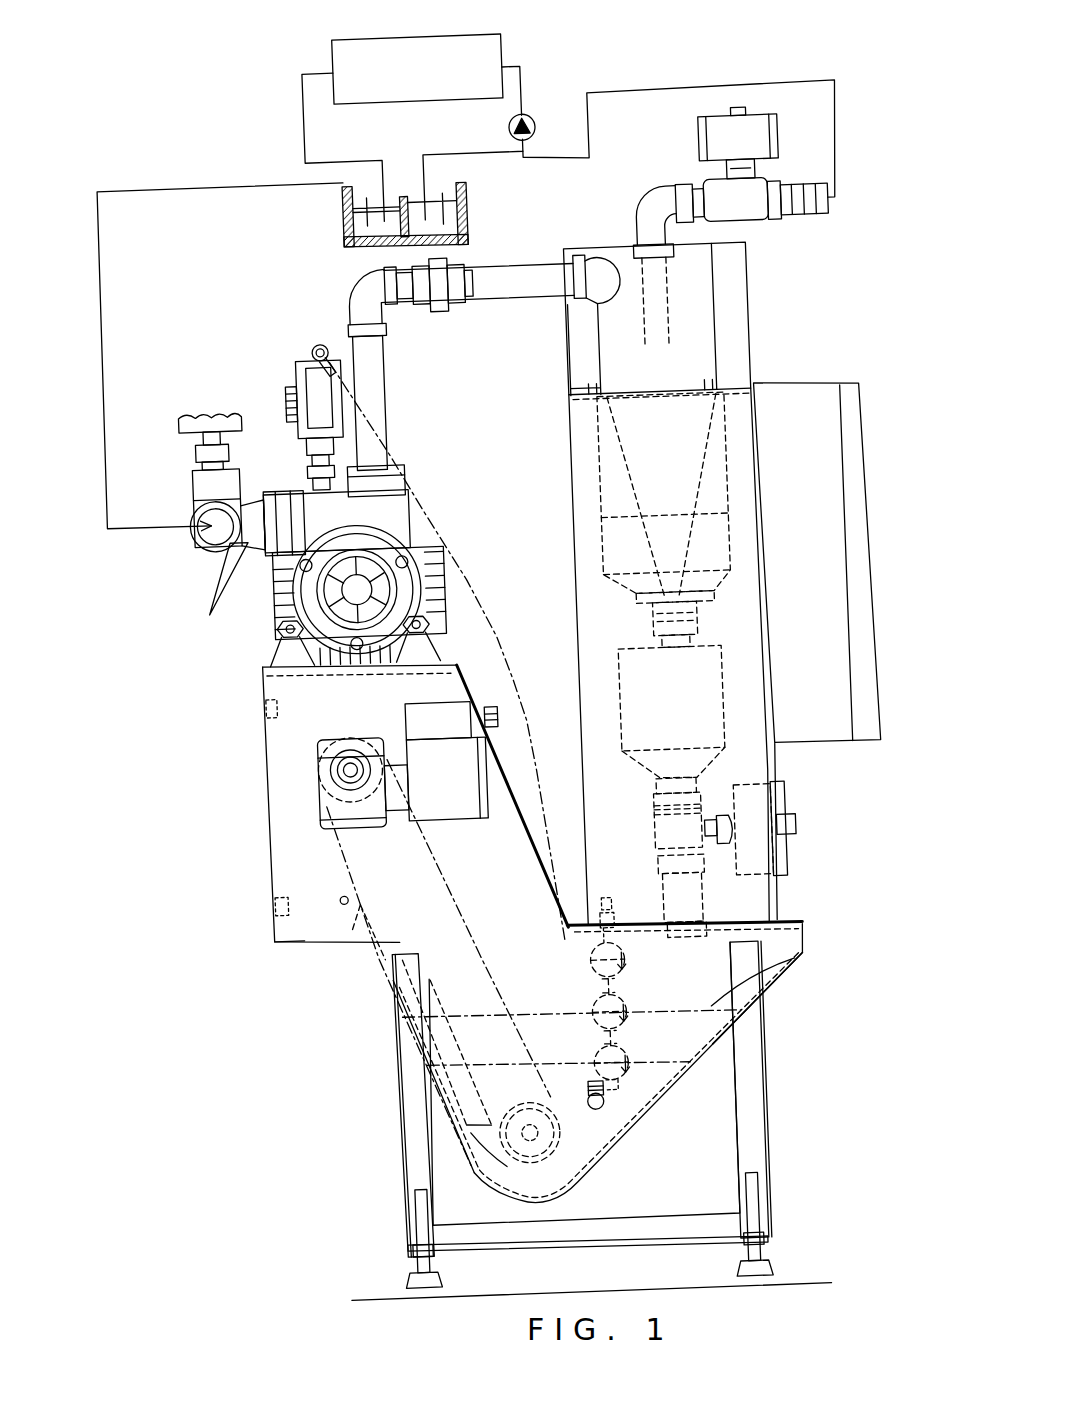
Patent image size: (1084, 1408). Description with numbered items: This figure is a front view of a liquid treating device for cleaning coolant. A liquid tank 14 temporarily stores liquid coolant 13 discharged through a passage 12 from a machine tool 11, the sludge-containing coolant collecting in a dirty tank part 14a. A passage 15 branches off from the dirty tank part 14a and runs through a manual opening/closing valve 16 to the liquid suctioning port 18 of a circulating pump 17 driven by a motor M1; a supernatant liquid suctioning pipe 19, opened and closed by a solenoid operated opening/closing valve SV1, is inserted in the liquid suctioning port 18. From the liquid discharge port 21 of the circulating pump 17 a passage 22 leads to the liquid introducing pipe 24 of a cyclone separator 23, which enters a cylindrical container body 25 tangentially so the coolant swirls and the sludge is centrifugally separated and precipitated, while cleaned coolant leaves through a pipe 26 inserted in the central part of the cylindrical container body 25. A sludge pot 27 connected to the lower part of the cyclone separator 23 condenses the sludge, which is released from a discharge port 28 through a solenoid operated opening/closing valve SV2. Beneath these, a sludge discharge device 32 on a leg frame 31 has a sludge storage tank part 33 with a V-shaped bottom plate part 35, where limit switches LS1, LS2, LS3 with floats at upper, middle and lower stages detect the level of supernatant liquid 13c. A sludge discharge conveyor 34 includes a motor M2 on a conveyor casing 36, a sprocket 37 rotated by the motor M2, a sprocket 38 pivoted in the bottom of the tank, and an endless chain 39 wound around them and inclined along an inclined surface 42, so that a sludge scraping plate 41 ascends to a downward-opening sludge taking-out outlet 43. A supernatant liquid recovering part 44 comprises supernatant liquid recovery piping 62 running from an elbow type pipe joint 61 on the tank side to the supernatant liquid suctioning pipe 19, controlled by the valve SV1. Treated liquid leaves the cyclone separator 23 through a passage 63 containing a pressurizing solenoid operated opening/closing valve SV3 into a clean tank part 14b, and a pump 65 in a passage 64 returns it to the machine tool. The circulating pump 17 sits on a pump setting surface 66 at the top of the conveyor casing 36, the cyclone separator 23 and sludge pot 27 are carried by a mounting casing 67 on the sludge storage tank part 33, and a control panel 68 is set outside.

The machine tool 11 is at (481, 32).
The passage 12 is at (325, 91).
The liquid coolant 13 is at (371, 200).
The liquid tank 14 is at (404, 229).
The dirty tank part 14a is at (375, 220).
The clean tank part 14b is at (474, 210).
The passage 15 is at (114, 318).
The manual opening/closing valve 16 is at (210, 474).
The circulating pump 17 is at (378, 538).
The liquid suctioning port 18 is at (280, 527).
The supernatant liquid suctioning pipe 19 is at (320, 480).
The liquid discharge port 21 is at (391, 456).
The passage 22 is at (401, 352).
The cyclone separator 23 is at (768, 312).
The liquid introducing pipe 24 is at (626, 286).
The cylindrical container body 25 is at (590, 345).
The pipe 26 is at (606, 369).
The sludge pot 27 is at (727, 688).
The discharge port 28 is at (685, 787).
The leg frame 31 is at (752, 1109).
The sludge discharge device 32 is at (612, 1118).
The sludge storage tank part 33 is at (708, 1047).
The sludge discharge conveyor 34 is at (346, 938).
The V-shaped bottom plate part 35 is at (580, 1165).
The conveyor casing 36 is at (287, 793).
The sprocket 37 is at (329, 794).
The sprocket 38 is at (490, 1158).
The endless chain 39 is at (446, 1077).
The sludge scraping plate 41 is at (466, 1140).
The inclined surface 42 is at (435, 1110).
The sludge taking-out outlet 43 is at (296, 933).
The supernatant liquid recovering part 44 is at (499, 653).
The elbow type pipe joint 61 is at (589, 1108).
The supernatant liquid recovery piping 62 is at (503, 637).
The passage 63 is at (856, 212).
The passage 64 is at (553, 158).
The pump 65 is at (557, 127).
The pump setting surface 66 is at (291, 656).
The mounting casing 67 is at (751, 901).
The control panel 68 is at (805, 394).
The motor M1 is at (428, 566).
The motor M2 is at (444, 806).
The solenoid operated opening/closing valve SV1 is at (330, 390).
The solenoid operated opening/closing valve SV2 is at (701, 848).
The solenoid operated opening/closing valve SV3 is at (768, 216).
The limit switch LS1 is at (618, 965).
The limit switch LS2 is at (627, 1019).
The limit switch LS3 is at (620, 1059).
The supernatant liquid 13c is at (785, 967).